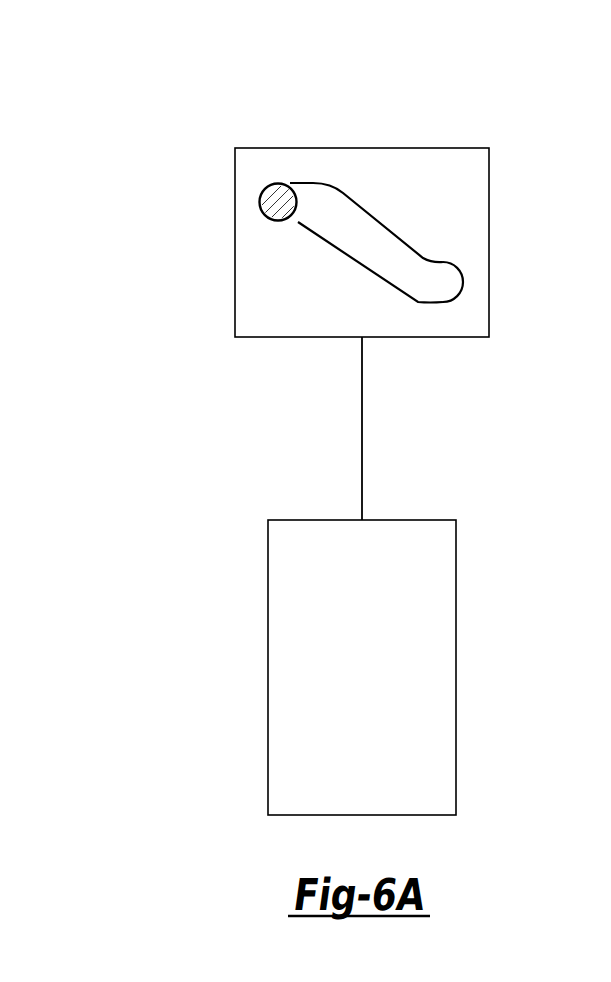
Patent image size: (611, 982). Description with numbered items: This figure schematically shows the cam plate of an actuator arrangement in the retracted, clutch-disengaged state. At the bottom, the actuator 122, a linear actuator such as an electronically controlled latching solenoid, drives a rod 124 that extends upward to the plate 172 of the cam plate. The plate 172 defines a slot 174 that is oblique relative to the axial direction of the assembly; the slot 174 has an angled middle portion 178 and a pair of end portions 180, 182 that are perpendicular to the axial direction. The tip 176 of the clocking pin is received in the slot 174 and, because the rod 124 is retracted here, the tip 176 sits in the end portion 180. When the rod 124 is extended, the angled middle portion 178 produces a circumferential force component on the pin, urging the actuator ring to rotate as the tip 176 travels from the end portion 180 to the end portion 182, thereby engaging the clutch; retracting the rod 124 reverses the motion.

The actuator 122 is at (373, 673).
The rod 124 is at (363, 428).
The housing plate 172 is at (461, 207).
The slot 174 is at (370, 218).
The tip 176 is at (278, 200).
The middle portion 178 is at (338, 250).
The end portion 180 is at (260, 202).
The end portion 182 is at (465, 282).